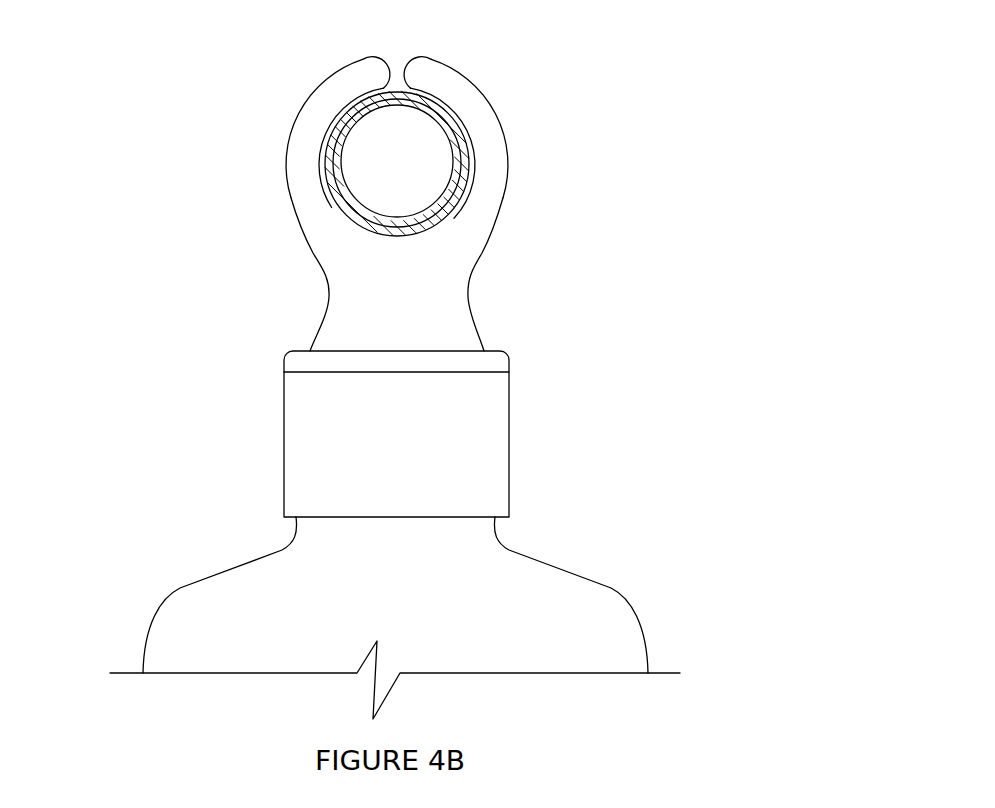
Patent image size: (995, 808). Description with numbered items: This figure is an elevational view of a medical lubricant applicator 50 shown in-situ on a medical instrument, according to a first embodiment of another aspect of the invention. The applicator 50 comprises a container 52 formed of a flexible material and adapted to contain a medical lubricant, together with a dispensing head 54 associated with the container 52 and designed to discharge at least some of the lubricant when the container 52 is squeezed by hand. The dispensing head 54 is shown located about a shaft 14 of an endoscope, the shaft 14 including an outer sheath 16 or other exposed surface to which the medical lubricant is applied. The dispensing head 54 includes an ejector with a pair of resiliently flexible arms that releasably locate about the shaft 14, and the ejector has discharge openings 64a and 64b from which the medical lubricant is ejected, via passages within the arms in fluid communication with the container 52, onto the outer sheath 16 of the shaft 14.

The shaft 14 is at (440, 101).
The outer sheath 16 is at (471, 127).
The medical lubricant applicator 50 is at (622, 242).
The container 52 is at (573, 622).
The dispensing head 54 is at (314, 204).
The discharge opening 64a is at (338, 213).
The discharge opening 64b is at (363, 237).